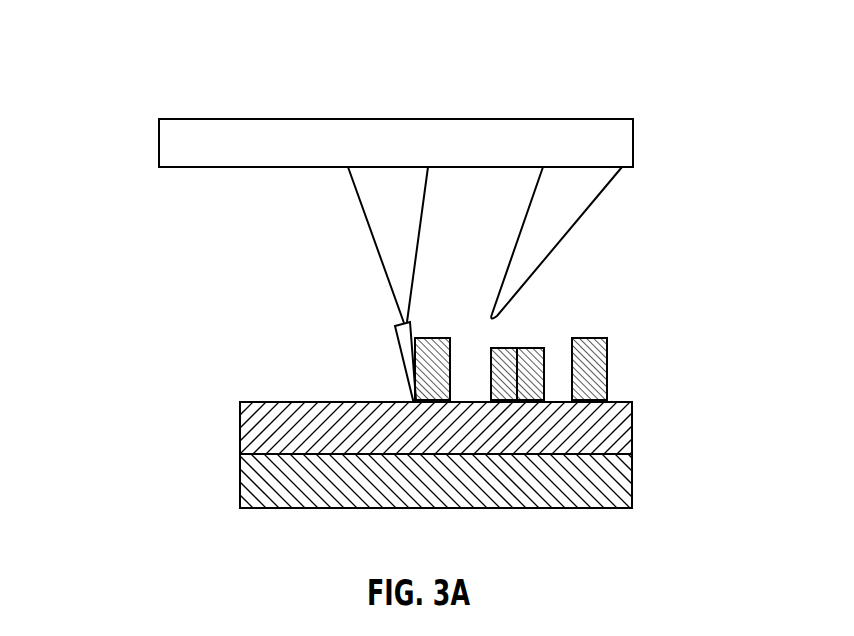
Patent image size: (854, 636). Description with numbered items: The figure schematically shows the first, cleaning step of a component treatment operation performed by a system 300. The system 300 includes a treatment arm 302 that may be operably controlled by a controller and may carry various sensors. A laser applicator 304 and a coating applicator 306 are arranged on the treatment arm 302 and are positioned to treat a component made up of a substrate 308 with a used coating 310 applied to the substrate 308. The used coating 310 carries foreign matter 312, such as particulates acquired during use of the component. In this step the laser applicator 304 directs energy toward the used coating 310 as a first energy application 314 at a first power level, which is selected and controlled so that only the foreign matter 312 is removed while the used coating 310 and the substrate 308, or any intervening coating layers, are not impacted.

The system 300 is at (146, 44).
The treatment arm 302 is at (232, 117).
The laser applicator 304 is at (385, 223).
The coating applicator 306 is at (560, 223).
The substrate 308 is at (253, 487).
The used coating 310 is at (253, 434).
The foreign matter 312 is at (607, 364).
The first energy application 314 is at (384, 345).